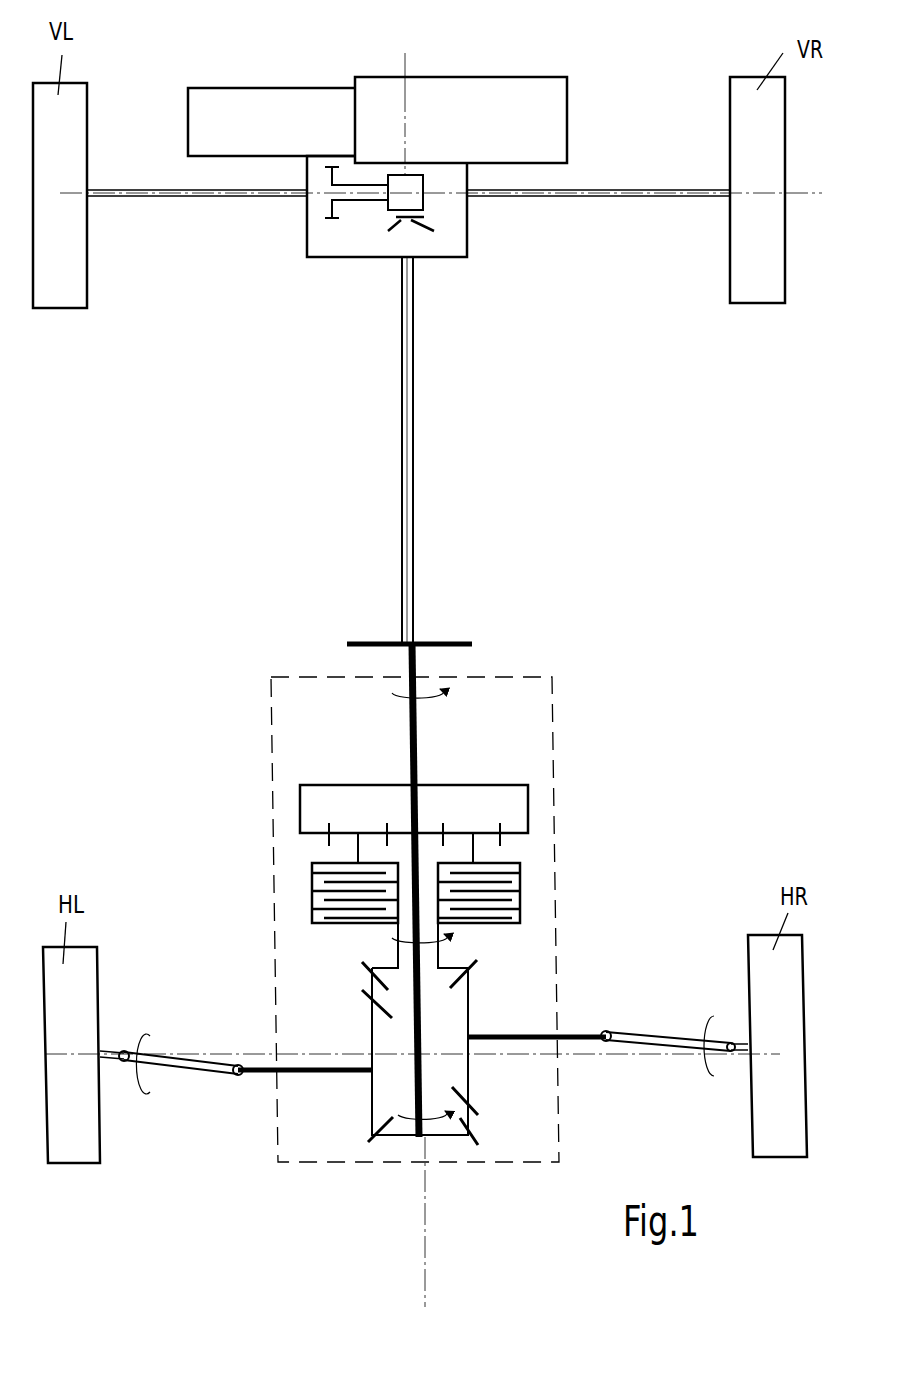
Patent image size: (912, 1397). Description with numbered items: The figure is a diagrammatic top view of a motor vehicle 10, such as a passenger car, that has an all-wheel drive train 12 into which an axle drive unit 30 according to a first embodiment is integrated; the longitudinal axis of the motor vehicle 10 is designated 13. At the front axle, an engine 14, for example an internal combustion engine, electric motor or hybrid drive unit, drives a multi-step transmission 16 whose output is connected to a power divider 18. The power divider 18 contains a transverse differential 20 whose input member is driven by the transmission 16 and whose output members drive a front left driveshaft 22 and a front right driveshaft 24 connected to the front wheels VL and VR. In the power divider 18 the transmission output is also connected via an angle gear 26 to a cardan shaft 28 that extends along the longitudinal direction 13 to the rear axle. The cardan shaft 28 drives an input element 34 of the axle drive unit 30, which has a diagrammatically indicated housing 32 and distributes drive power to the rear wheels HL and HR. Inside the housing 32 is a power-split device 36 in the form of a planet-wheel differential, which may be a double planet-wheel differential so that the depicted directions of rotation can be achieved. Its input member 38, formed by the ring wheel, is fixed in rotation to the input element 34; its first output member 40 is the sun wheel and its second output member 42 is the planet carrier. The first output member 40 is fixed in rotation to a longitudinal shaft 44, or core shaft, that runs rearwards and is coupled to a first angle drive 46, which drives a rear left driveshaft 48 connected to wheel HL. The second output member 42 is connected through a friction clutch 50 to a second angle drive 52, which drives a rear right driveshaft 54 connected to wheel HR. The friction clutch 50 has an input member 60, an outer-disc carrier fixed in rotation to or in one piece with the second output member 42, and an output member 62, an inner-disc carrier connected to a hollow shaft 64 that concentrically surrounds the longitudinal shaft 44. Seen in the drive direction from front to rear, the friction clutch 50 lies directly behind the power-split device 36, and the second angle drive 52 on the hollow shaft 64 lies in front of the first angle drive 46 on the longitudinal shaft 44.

The motor vehicle 10 is at (672, 86).
The all-wheel drive train 12 is at (614, 90).
The longitudinal axis 13 is at (428, 1262).
The engine 14 is at (497, 87).
The multi-step transmission 16 is at (280, 107).
The power divider 18 is at (500, 226).
The transverse differential 20 is at (388, 210).
The front left driveshaft 22 is at (198, 200).
The front right driveshaft 24 is at (643, 196).
The angle gear 26 is at (420, 223).
The cardan shaft 28 is at (415, 444).
The axle drive unit 30 is at (634, 683).
The housing 32 is at (553, 675).
The input element 34 is at (370, 643).
The power-split device 36 is at (449, 768).
The input member 38 is at (300, 807).
The first output member 40 is at (405, 833).
The second output member 42 is at (475, 860).
The longitudinal shaft 44 is at (372, 1103).
The first angle drive 46 is at (372, 1140).
The rear left driveshaft 48 is at (183, 1063).
The friction clutch 50 is at (480, 898).
The second angle drive 52 is at (465, 965).
The rear right driveshaft 54 is at (672, 1043).
The input member of the friction clutch 60 is at (465, 918).
The output member of the friction clutch 62 is at (397, 915).
The hollow shaft 64 is at (390, 950).